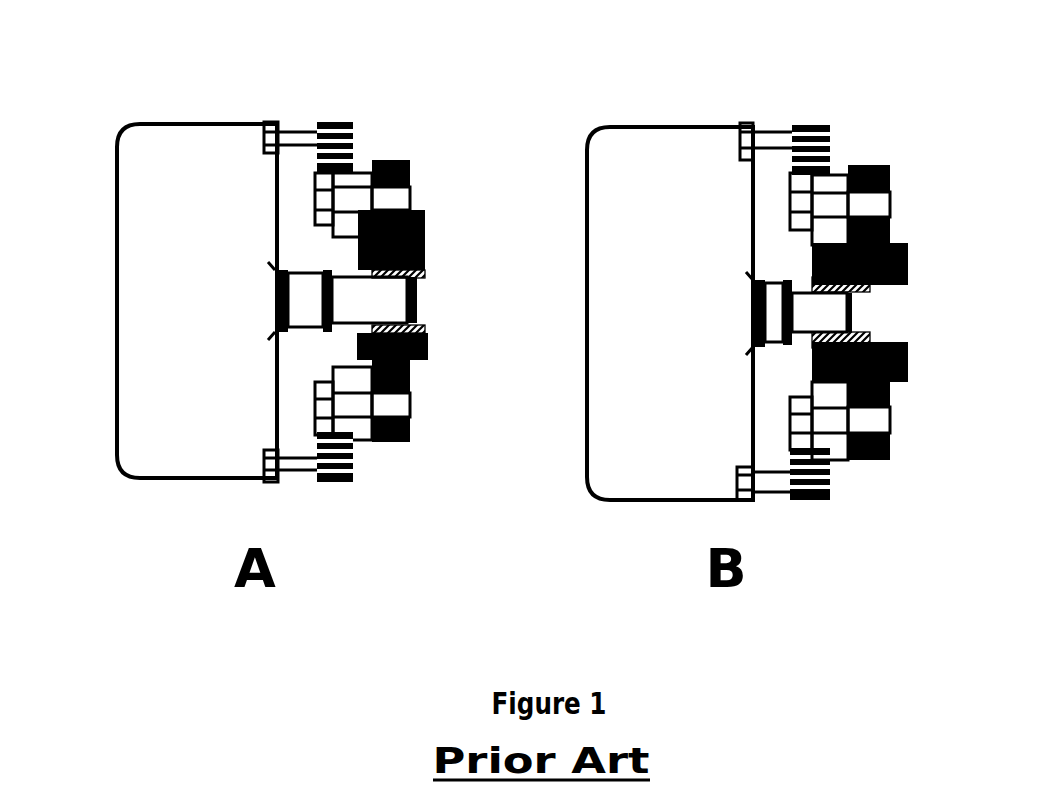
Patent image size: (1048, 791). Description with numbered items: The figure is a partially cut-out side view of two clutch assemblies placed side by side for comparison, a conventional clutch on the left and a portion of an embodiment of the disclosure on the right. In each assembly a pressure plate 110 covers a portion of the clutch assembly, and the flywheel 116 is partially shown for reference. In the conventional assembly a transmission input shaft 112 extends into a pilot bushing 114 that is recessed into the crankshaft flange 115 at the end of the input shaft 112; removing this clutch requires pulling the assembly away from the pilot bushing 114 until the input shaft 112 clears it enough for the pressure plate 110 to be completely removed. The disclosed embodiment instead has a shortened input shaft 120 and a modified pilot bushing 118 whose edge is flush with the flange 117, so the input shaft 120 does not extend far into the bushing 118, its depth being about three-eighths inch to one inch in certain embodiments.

The pressure plate 110 is at (232, 143).
The transmission input shaft 112 is at (422, 298).
The pilot bushing 114 is at (425, 330).
The crankshaft flange 115 is at (420, 242).
The flywheel 116 is at (337, 482).
The flange 117 is at (910, 255).
The modified pilot bushing 118 is at (870, 290).
The shortened input shaft 120 is at (822, 310).